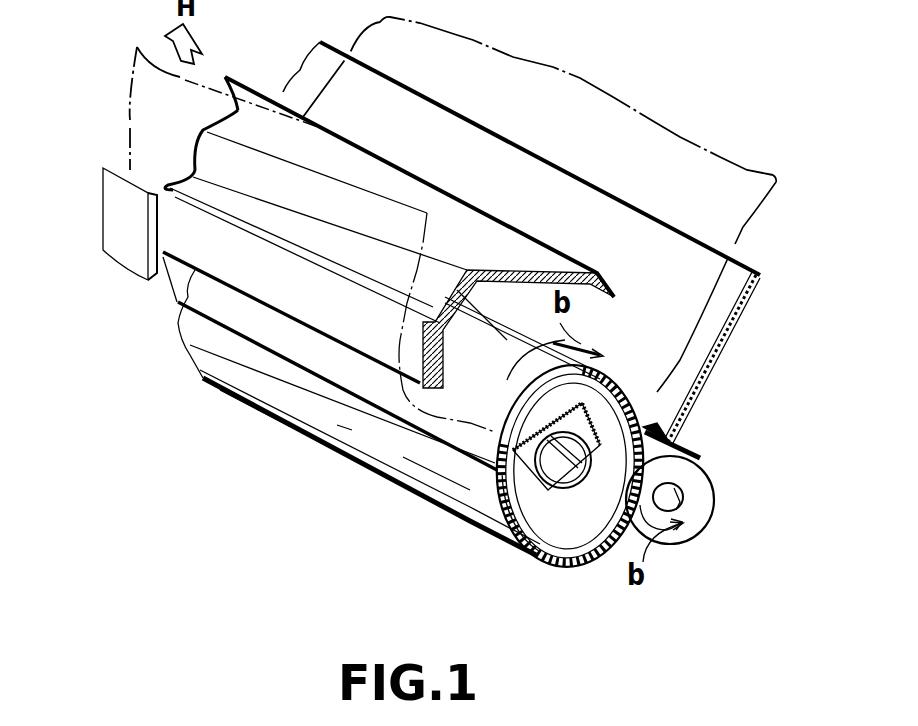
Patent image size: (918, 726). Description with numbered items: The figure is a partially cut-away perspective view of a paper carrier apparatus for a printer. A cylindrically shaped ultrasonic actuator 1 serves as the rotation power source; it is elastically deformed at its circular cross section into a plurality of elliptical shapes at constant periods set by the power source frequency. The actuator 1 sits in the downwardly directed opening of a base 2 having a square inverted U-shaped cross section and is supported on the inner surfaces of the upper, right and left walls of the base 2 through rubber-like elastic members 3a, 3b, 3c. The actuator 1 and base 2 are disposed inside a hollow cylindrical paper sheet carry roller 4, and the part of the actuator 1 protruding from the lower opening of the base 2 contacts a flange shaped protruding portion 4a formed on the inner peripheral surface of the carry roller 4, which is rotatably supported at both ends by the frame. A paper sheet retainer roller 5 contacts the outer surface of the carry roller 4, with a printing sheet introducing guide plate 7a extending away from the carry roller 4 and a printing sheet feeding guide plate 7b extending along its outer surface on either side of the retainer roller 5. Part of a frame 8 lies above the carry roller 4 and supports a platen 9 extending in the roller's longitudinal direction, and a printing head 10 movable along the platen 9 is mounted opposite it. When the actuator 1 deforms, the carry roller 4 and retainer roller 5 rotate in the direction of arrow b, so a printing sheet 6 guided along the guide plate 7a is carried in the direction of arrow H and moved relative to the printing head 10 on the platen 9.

The ultrasonic actuator 1 is at (541, 560).
The base 2 is at (590, 412).
The elastic member 3a is at (477, 535).
The elastic member 3b is at (607, 452).
The elastic member 3c is at (517, 410).
The paper sheet carry roller 4 is at (357, 380).
The flange shaped protruding portion 4a is at (700, 458).
The paper sheet retainer roller 5 is at (702, 496).
The printing sheet 6 is at (720, 157).
The printing sheet introducing guide plate 7a is at (747, 305).
The printing sheet feeding guide plate 7b is at (393, 480).
The frame 8 is at (477, 200).
The platen 9 is at (277, 295).
The printing head 10 is at (108, 193).